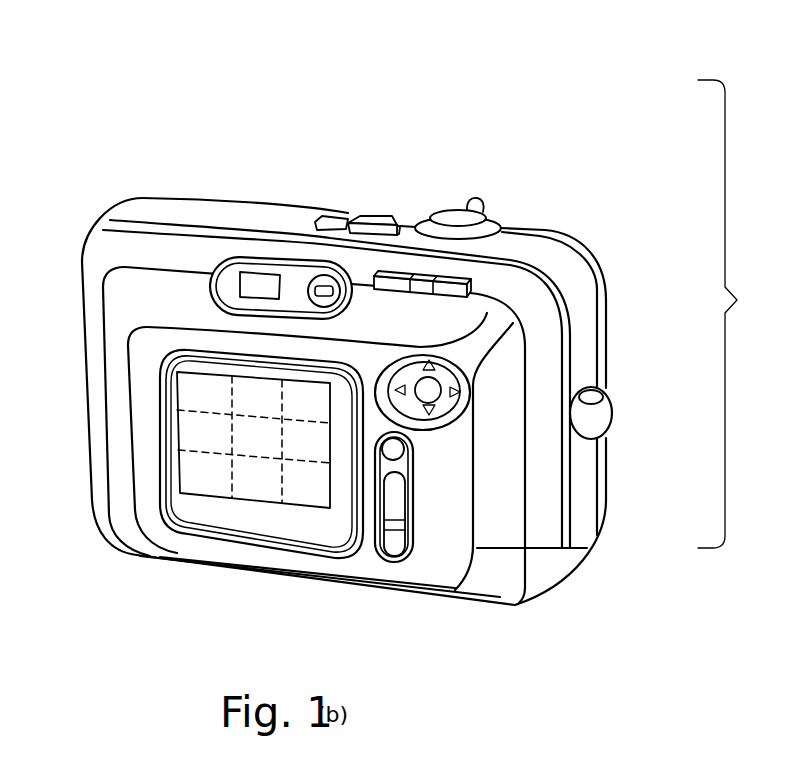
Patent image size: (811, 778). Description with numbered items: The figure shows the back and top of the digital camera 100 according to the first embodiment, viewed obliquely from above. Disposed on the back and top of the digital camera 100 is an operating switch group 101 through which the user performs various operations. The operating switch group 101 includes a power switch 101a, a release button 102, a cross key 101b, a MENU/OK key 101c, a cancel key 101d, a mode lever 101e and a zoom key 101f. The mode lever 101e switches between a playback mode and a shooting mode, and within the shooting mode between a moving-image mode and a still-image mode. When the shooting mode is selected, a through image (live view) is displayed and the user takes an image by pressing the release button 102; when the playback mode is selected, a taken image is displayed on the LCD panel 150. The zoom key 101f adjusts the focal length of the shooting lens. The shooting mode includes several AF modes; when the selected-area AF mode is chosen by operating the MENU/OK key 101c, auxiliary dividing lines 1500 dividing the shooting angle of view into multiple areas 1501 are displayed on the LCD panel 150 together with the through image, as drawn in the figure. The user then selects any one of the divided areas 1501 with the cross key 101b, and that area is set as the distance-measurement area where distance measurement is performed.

The digital camera 100 is at (398, 355).
The operating switch group 101 is at (460, 352).
The power switch 101a is at (366, 217).
The cross key 101b is at (452, 410).
The MENU/OK key 101c is at (394, 483).
The cancel key 101d is at (400, 593).
The mode lever 101e is at (500, 218).
The zoom key 101f is at (473, 278).
The release button 102 is at (447, 215).
The LCD panel 150 is at (187, 505).
The auxiliary dividing lines 1500 is at (280, 433).
The areas 1501 is at (300, 483).